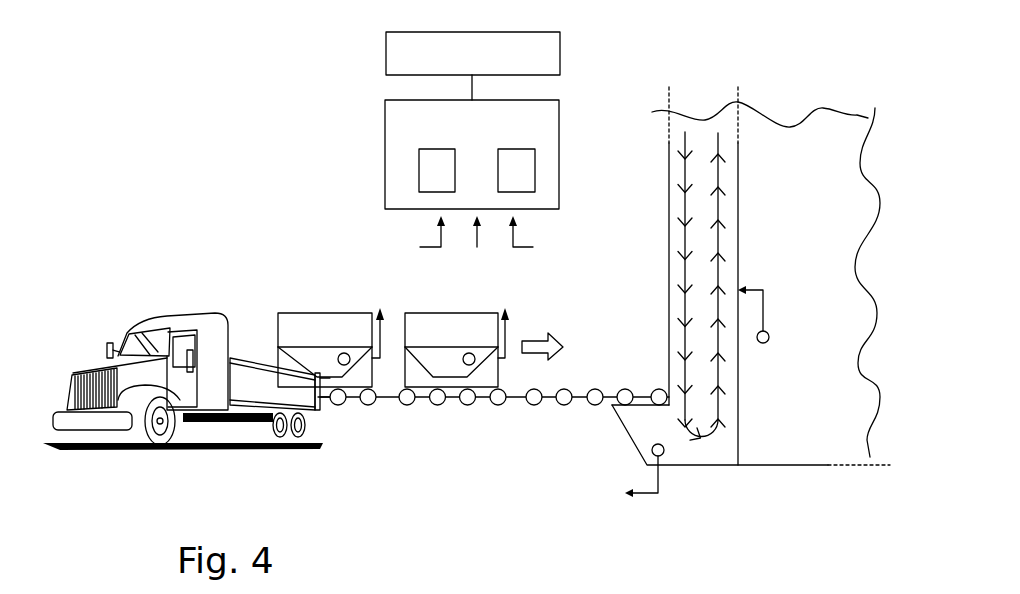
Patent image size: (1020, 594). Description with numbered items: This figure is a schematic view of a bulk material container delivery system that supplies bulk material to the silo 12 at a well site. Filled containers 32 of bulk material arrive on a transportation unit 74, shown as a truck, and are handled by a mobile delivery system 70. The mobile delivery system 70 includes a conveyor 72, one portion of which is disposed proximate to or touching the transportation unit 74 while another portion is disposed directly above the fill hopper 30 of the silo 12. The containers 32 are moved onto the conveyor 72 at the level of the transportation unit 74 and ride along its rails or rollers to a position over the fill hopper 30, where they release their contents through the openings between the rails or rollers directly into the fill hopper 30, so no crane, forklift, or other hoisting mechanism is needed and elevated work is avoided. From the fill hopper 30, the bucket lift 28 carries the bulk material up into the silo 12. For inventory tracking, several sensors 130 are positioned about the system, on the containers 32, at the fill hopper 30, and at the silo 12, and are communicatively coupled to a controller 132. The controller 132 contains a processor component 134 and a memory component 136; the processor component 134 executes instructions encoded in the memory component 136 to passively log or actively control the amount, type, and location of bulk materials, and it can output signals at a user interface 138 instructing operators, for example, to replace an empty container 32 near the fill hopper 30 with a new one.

The silo 12 is at (826, 233).
The bucket lift 28 is at (695, 208).
The fill hopper 30 is at (633, 435).
The containers 32 is at (300, 313).
The mobile delivery system 70 is at (259, 217).
The conveyor 72 is at (518, 402).
The transportation unit 74 is at (155, 315).
The sensors 130 is at (344, 353).
The controller 132 is at (464, 166).
The processor component 134 is at (419, 172).
The memory component 136 is at (535, 168).
The user interface 138 is at (386, 56).